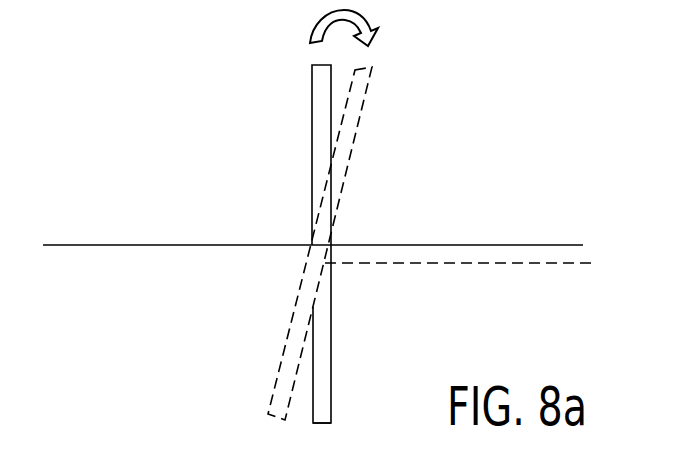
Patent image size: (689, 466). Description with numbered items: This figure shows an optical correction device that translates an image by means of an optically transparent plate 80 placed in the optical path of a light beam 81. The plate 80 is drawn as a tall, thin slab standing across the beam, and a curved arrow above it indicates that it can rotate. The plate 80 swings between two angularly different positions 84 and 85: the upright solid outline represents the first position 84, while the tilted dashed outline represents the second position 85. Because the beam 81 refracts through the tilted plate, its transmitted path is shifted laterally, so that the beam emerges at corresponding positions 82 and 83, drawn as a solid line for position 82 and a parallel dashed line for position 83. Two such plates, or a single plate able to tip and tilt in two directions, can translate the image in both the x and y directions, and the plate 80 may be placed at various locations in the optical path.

The optically transparent plate 80 is at (311, 120).
The light beam 81 is at (98, 245).
The first translated beam position 82 is at (412, 245).
The second translated beam position 83 is at (430, 265).
The first angular position of plate 84 is at (332, 408).
The second angular position of plate 85 is at (266, 410).